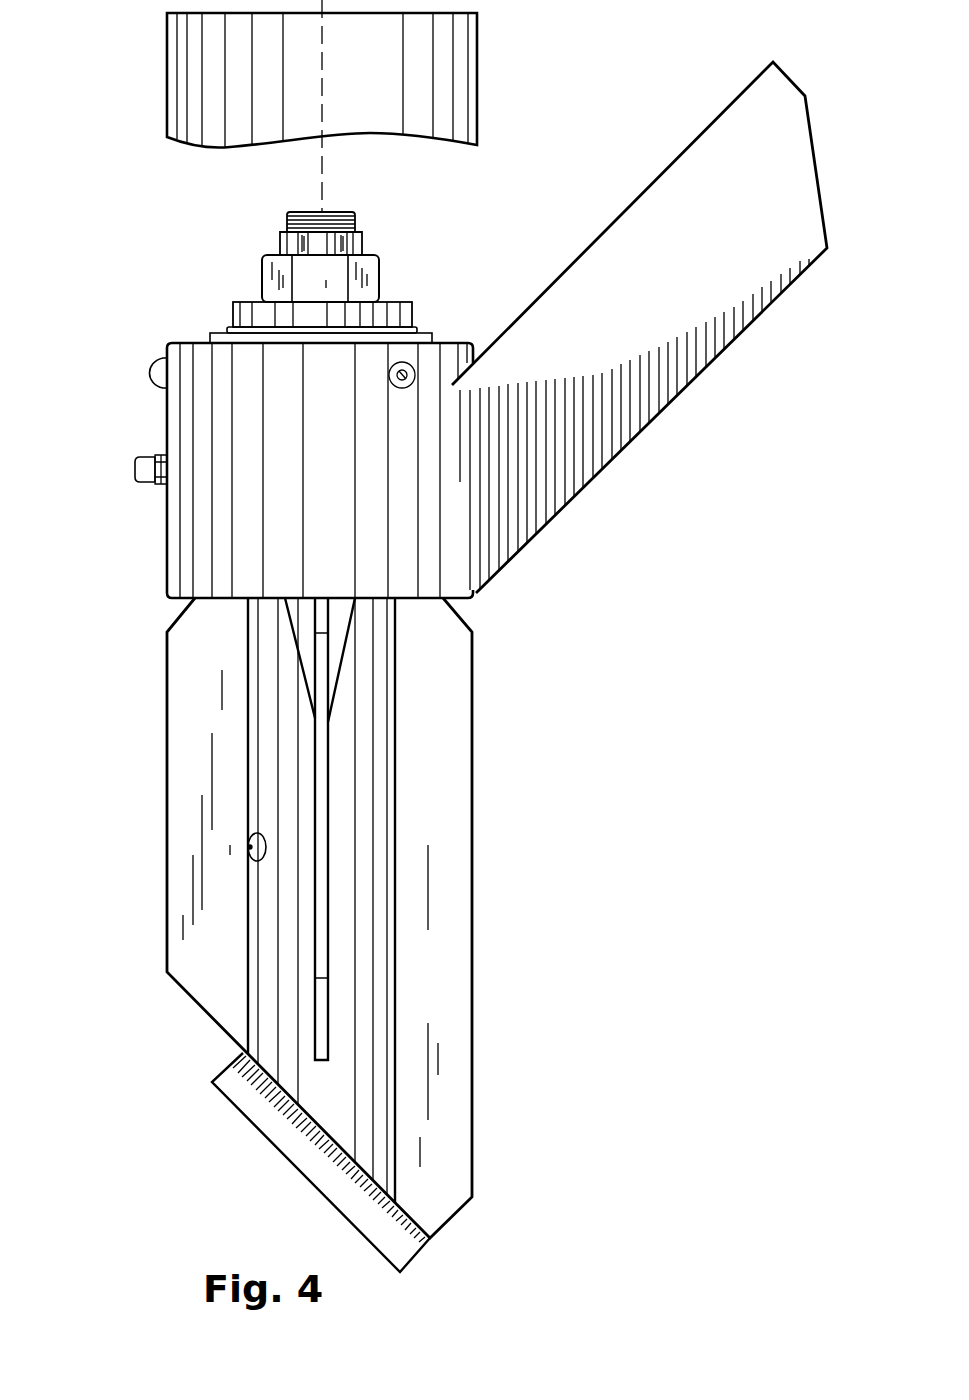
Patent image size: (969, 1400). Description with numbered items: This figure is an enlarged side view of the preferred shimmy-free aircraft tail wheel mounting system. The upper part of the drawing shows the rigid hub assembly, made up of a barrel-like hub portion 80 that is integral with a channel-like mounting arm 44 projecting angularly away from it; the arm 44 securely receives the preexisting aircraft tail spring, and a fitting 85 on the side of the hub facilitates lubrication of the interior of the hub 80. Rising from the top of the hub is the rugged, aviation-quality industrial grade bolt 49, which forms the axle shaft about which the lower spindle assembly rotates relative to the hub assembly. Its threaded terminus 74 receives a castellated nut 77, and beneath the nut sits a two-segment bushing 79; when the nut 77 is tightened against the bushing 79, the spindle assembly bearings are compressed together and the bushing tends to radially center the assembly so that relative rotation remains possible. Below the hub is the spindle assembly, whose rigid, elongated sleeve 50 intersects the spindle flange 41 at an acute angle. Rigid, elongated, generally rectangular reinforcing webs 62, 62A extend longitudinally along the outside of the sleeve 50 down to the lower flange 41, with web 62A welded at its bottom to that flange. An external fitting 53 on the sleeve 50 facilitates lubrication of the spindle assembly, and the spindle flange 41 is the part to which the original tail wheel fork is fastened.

The spindle flange 41 is at (408, 1240).
The channel-like arm 44 is at (715, 286).
The industrial grade bolt 49 is at (305, 208).
The elongated sleeve 50 is at (367, 978).
The external fitting 53 is at (252, 863).
The reinforcing web 62 is at (313, 960).
The reinforcing web 62A is at (473, 875).
The threaded terminus 74 is at (345, 210).
The castellated nut 77 is at (270, 277).
The two-segment bushing 79 is at (400, 313).
The hub portion 80 is at (187, 558).
The fitting 85 is at (140, 458).